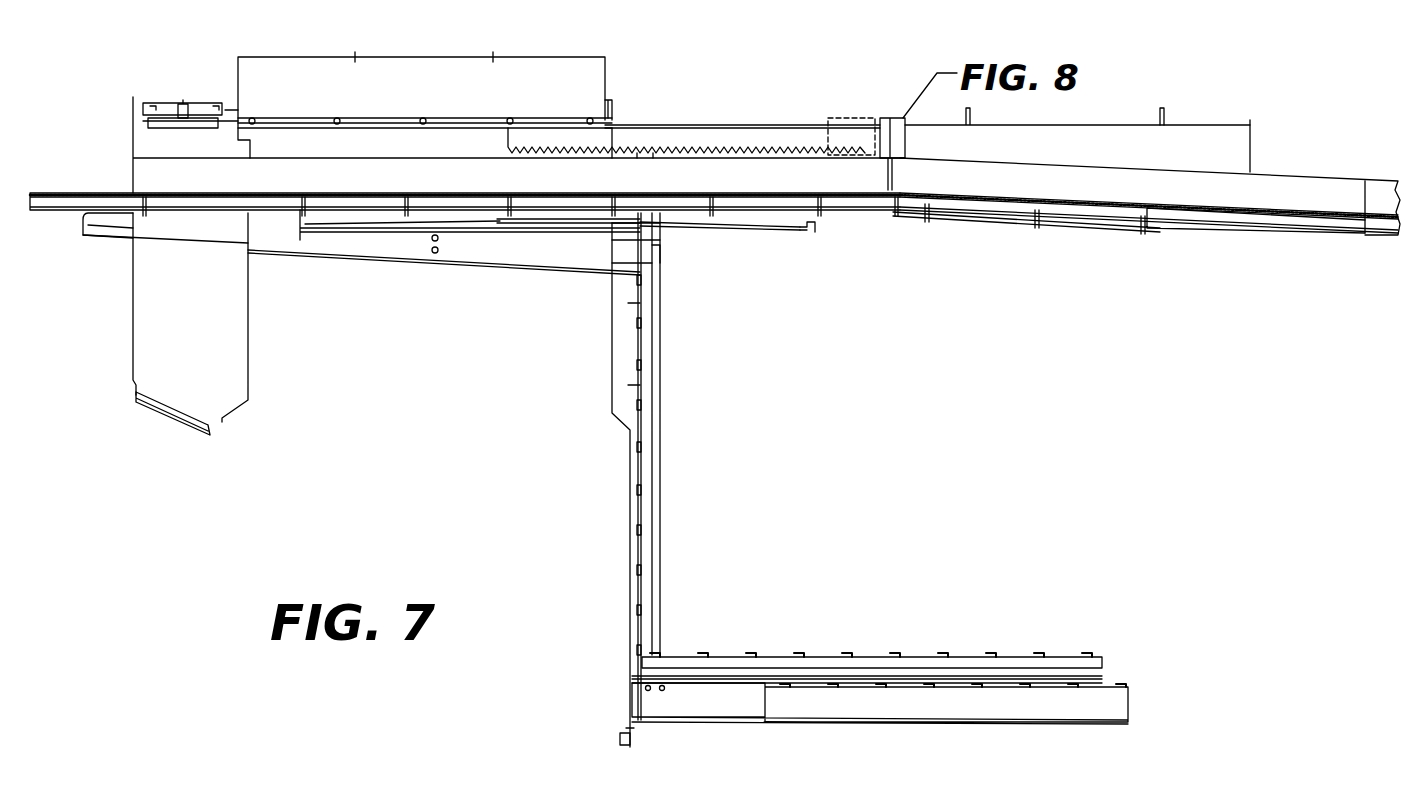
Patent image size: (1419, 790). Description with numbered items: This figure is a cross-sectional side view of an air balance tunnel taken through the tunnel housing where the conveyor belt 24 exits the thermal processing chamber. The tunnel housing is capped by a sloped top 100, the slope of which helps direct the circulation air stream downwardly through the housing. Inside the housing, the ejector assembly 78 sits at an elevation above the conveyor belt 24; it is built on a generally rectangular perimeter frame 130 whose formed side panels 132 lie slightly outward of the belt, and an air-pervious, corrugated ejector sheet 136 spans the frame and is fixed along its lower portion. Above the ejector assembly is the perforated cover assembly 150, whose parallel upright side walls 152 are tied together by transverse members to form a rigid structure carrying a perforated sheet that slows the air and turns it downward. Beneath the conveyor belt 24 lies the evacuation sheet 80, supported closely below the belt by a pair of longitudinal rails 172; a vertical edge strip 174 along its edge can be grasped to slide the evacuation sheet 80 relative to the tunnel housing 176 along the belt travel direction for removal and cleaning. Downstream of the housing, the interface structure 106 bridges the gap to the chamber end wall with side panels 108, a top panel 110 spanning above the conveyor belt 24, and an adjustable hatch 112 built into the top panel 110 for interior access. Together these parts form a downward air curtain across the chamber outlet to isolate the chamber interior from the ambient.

The conveyor belt 24 is at (1310, 180).
The ejector assembly 78 is at (717, 109).
The evacuation sheet 80 is at (697, 232).
The sloped top 100 is at (428, 55).
The interface structure 106 is at (130, 297).
The side panels 108 is at (175, 337).
The top panel 110 is at (155, 100).
The adjustable hatch 112 is at (185, 100).
The perimeter frame 130 is at (650, 120).
The side panels 132 is at (795, 130).
The ejector sheet 136 is at (683, 140).
The perforated cover assembly 150 is at (1098, 109).
The upright side walls 152 is at (1207, 145).
The longitudinal rails 172 is at (340, 233).
The vertical edge strip 174 is at (815, 227).
The tunnel housing 176 is at (758, 229).